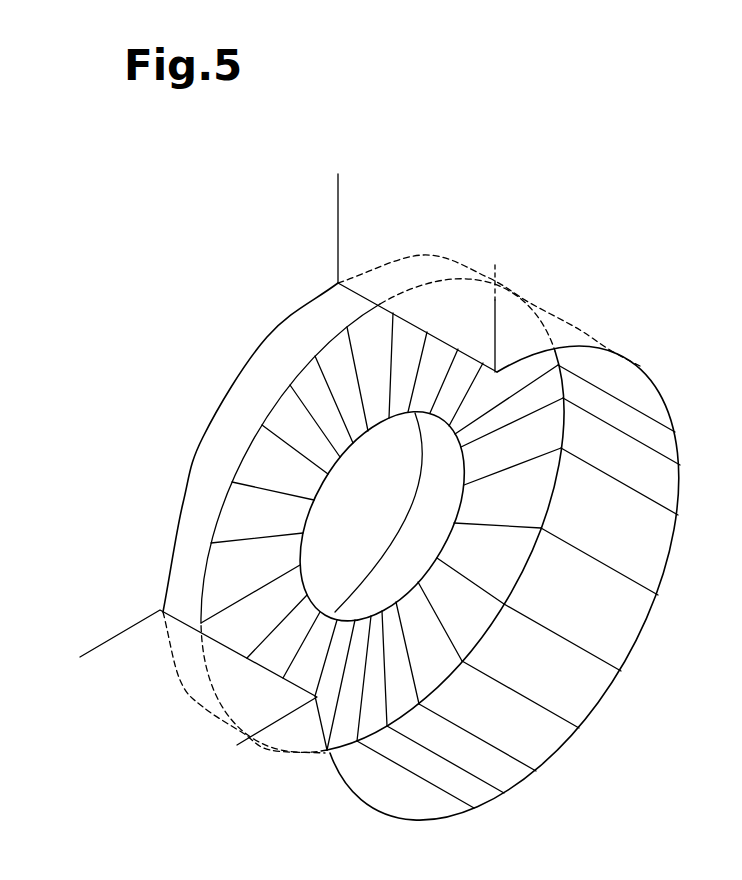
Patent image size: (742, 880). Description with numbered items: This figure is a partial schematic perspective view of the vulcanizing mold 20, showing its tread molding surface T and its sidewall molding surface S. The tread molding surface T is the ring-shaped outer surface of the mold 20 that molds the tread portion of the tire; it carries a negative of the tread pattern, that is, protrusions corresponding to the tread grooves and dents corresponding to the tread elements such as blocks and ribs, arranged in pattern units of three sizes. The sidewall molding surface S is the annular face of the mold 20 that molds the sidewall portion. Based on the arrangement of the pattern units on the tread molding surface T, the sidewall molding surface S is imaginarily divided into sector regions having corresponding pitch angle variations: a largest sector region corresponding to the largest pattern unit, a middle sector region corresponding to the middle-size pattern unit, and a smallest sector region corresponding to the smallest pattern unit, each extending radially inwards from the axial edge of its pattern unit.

The vulcanizing mold 20 is at (665, 352).
The sidewall molding surface S is at (209, 600).
The tread molding surface T is at (608, 637).